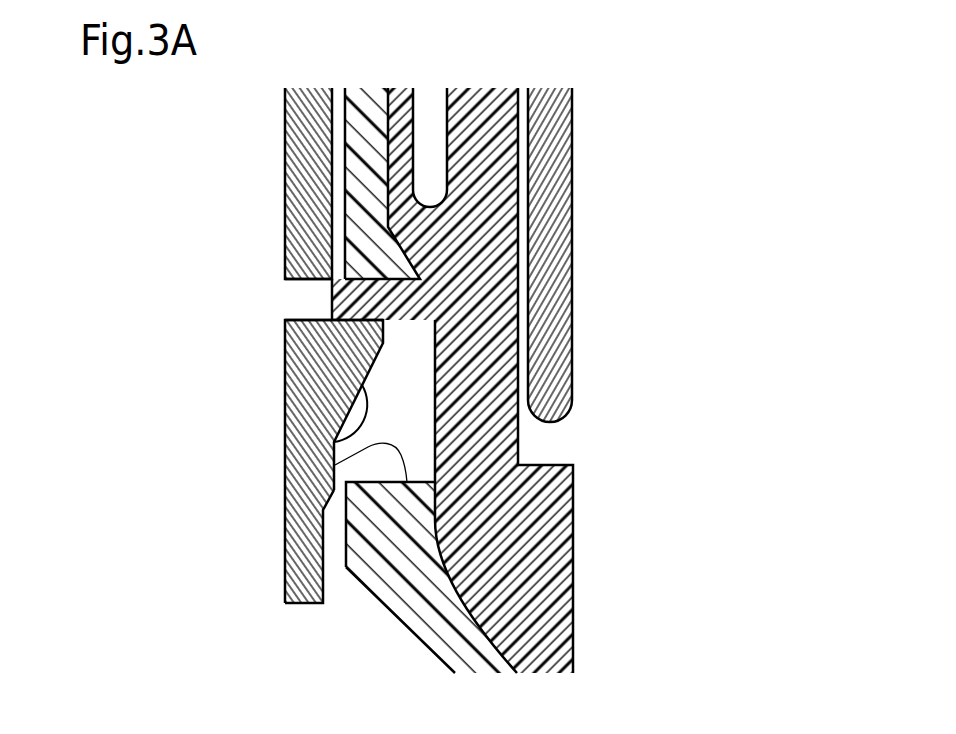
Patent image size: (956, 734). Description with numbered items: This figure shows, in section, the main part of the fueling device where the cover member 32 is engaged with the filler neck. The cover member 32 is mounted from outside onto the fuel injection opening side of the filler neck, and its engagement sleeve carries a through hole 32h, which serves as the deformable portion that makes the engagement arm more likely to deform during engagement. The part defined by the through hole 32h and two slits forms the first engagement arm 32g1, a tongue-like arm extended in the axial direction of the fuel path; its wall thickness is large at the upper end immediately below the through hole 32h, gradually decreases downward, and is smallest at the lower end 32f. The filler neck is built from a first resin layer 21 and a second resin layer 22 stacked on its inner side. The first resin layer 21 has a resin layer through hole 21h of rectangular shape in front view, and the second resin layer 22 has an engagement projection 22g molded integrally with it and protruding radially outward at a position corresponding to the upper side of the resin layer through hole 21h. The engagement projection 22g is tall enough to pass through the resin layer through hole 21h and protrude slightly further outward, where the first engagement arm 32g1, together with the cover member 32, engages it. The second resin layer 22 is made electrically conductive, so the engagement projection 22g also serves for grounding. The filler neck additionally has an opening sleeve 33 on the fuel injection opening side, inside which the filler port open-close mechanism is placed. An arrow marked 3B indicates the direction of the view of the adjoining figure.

The first resin layer 21 is at (425, 647).
The resin layer through hole 21h is at (335, 465).
The second resin layer 22 is at (563, 573).
The engagement projection 22g is at (393, 303).
The cover member 32 is at (285, 178).
The through hole 32h is at (302, 301).
The first engagement arm 32g1 is at (335, 442).
The lower end 32f is at (295, 552).
The opening sleeve 33 is at (567, 173).
The view direction of Fig. 3B is at (113, 322).